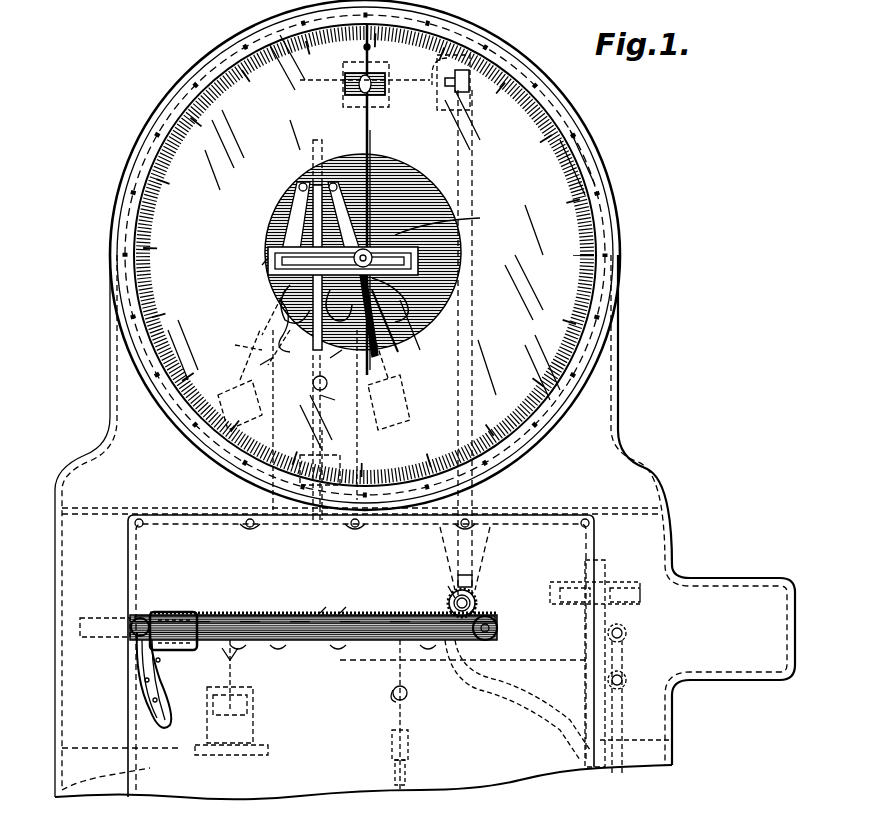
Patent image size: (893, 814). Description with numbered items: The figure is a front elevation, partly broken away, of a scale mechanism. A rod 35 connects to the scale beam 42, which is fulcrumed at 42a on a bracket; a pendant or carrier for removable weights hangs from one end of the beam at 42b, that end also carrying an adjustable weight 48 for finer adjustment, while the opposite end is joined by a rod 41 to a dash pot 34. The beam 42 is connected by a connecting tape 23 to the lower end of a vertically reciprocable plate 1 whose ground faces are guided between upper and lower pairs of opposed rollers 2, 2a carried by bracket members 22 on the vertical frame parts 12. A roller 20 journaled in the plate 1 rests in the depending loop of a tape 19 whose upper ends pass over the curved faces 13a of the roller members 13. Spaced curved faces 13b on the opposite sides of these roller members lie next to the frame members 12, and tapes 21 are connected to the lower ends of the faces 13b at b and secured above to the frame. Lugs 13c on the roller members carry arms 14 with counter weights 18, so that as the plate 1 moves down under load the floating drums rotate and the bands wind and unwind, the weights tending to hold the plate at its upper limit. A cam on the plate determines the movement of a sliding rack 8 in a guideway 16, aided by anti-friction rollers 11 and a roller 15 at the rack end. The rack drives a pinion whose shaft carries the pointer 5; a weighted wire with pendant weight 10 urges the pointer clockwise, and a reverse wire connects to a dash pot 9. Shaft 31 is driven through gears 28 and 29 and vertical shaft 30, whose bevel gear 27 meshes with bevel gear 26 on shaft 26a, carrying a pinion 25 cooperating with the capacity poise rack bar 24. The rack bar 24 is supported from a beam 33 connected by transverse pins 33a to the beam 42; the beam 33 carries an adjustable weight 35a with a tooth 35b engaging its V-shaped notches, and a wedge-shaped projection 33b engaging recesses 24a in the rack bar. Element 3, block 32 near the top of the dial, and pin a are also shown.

The vertically reciprocable plate 1 is at (352, 427).
The upper opposed rollers 2 is at (360, 135).
The lower opposed rollers 2a is at (312, 460).
The link 3 is at (344, 216).
The indicating arm or pointer 5 is at (370, 140).
The sliding rack 8 is at (420, 250).
The dash pot 9 is at (326, 286).
The pendant weight 10 is at (410, 320).
The anti-friction rollers 11 is at (270, 250).
The vertical frame parts 12 is at (275, 265).
The roller members 13 is at (276, 300).
The curved faces of the roller members 13a is at (313, 378).
The spaced curved faces 13b is at (275, 325).
The lugs or projections 13c is at (280, 308).
The arms 14 is at (231, 347).
The roller 15 is at (319, 216).
The guideway 16 is at (446, 222).
The counter weights 18 is at (225, 380).
The tape or band 19 is at (327, 383).
The roller 20 is at (334, 404).
The tapes or bands 21 is at (262, 352).
The bracket members 22 is at (290, 528).
The connecting tape 23 is at (330, 548).
The rack bar or capacity poise rack 24 is at (388, 605).
The recesses 24a is at (355, 612).
The pinion 25 is at (452, 603).
The bevel gear 26 is at (478, 596).
The shaft 26a is at (445, 580).
The bevel gear 27 is at (474, 590).
The gear 28 is at (472, 95).
The gear 29 is at (442, 96).
The vertical shaft 30 is at (472, 130).
The shaft 31 is at (318, 85).
The slide block 32 is at (343, 78).
The beam or bar 33 is at (335, 642).
The transverse pins or rods 33a is at (137, 640).
The wedge shaped projection 33b is at (498, 632).
The dash pot 34 is at (253, 725).
The rod 35 is at (408, 766).
The adjustable weight 35a is at (188, 618).
The rib or tooth 35b is at (183, 596).
The rod 41 is at (236, 668).
The scale beam 42 is at (430, 670).
The fulcrum 42a is at (462, 668).
The pendant or carrier for removable weights 42b is at (675, 748).
The adjustable weight 48 is at (610, 565).
The pin a is at (253, 256).
The tape connection b is at (301, 353).